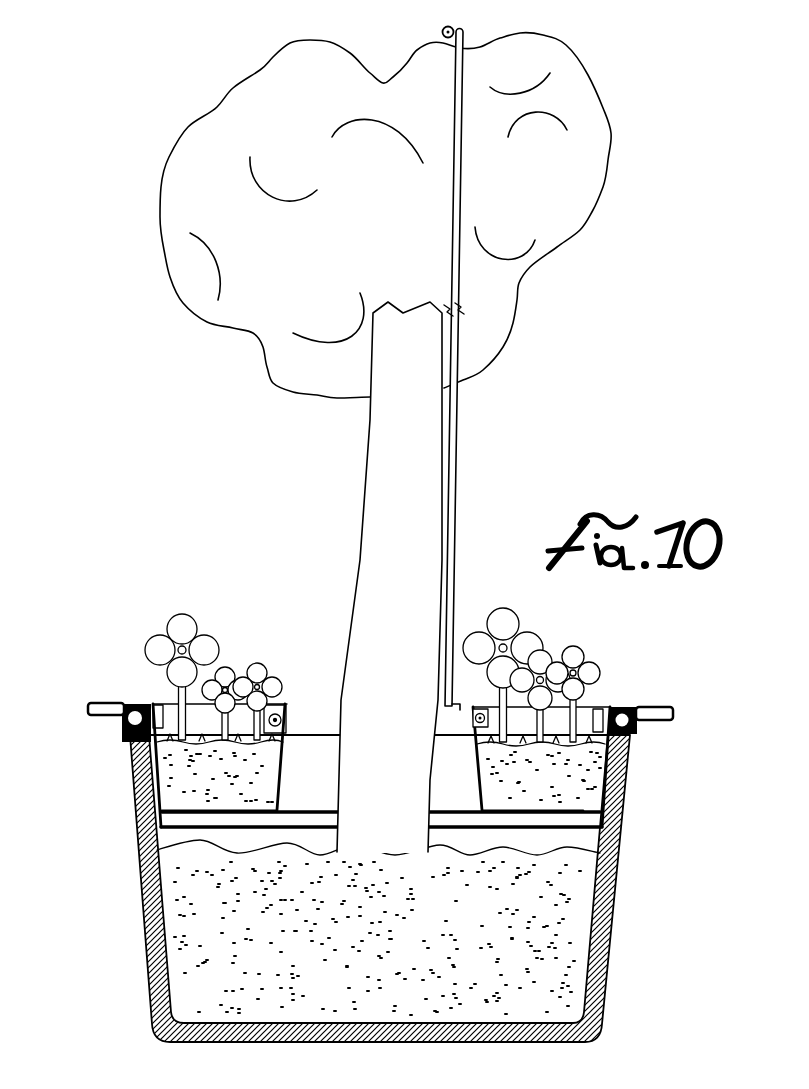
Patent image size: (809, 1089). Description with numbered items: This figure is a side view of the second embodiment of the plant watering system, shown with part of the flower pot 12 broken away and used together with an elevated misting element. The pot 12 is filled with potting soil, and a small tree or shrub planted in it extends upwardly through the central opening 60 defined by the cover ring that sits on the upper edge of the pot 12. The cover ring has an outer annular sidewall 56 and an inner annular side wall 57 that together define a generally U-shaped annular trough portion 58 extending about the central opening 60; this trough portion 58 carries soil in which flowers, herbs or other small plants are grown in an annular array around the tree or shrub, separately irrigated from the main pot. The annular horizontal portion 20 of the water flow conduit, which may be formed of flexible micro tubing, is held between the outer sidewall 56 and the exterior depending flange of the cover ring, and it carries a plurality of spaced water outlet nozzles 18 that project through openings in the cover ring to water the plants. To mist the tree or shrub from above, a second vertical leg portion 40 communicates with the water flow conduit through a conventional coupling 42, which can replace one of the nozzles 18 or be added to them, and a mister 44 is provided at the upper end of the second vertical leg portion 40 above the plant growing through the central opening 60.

The flower pot 12 is at (614, 886).
The water outlet nozzles 18 is at (162, 705).
The annular horizontal portion 20 is at (124, 722).
The second vertical leg portion 40 is at (460, 466).
The coupling 42 is at (478, 713).
The mister 44 is at (442, 31).
The outer annular sidewall 56 is at (582, 773).
The inner annular side wall 57 is at (284, 748).
The U-shaped annular trough portion 58 is at (264, 749).
The central opening 60 is at (318, 800).